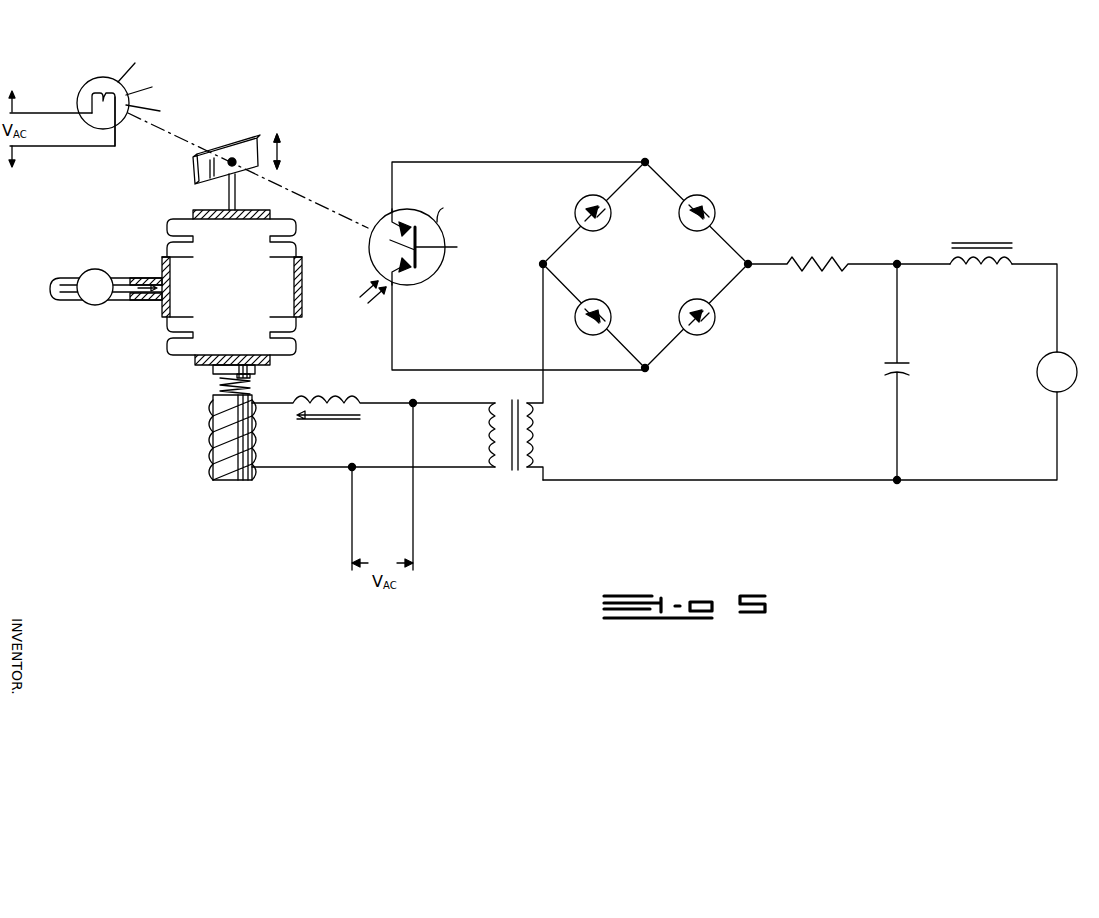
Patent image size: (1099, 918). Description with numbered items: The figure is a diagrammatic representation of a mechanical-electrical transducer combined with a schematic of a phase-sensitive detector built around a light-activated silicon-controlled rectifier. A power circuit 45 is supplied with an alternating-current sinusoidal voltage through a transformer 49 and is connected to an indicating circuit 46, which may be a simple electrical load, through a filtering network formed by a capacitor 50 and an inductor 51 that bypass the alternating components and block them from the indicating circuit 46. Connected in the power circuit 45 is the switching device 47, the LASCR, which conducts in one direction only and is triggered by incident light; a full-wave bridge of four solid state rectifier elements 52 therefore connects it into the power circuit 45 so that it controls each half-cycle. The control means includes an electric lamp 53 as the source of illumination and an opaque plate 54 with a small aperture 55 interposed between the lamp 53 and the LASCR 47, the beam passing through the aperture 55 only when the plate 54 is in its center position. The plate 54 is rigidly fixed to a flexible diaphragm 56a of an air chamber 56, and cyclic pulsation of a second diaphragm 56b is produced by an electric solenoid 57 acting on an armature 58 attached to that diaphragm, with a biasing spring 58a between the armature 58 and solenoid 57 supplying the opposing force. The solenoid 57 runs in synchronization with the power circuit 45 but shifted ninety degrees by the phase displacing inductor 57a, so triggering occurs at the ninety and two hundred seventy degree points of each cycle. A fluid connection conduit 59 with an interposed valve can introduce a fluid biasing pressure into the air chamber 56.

The power circuit 45 is at (700, 484).
The indicating circuit 46 is at (1039, 376).
The switching device 47 is at (437, 270).
The transformer 49 is at (536, 432).
The capacitor 50 is at (905, 364).
The inductor 51 is at (985, 243).
The solid state rectifier elements 52 is at (610, 226).
The electric lamp 53 is at (105, 77).
The opaque plate 54 is at (195, 170).
The aperture 55 is at (234, 157).
The air chamber 56 is at (158, 308).
The flexible diaphragm 56a is at (203, 211).
The second diaphragm 56b is at (197, 360).
The electric solenoid 57 is at (233, 474).
The phase displacing inductor 57a is at (325, 421).
The armature 58 is at (213, 371).
The biasing spring 58a is at (250, 388).
The fluid connection conduit 59 is at (145, 276).